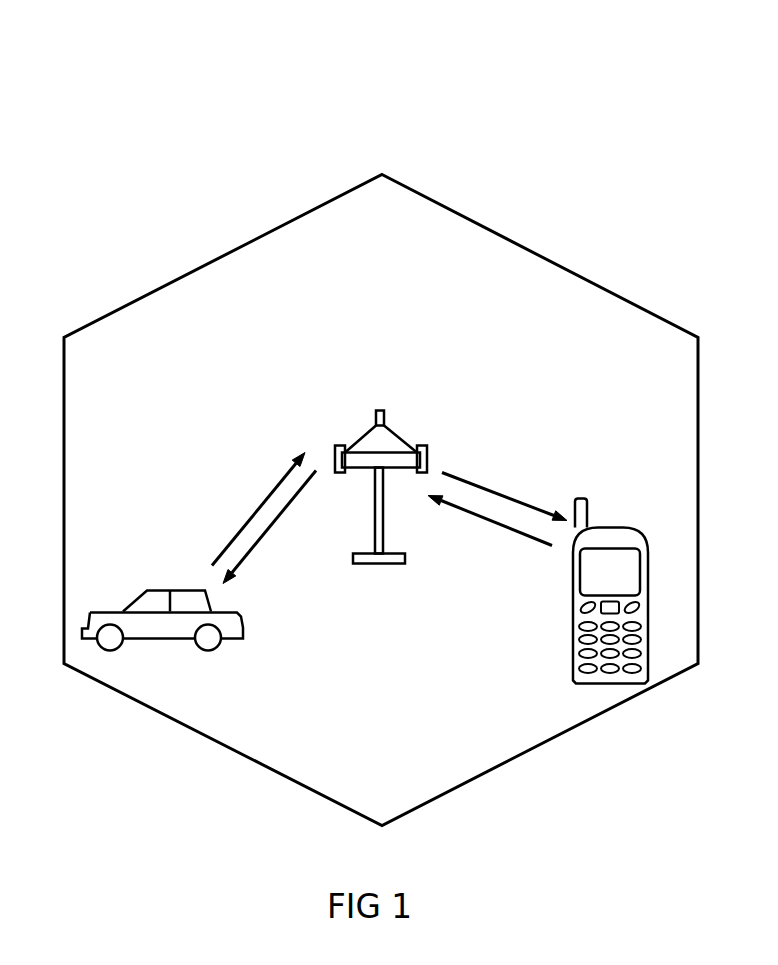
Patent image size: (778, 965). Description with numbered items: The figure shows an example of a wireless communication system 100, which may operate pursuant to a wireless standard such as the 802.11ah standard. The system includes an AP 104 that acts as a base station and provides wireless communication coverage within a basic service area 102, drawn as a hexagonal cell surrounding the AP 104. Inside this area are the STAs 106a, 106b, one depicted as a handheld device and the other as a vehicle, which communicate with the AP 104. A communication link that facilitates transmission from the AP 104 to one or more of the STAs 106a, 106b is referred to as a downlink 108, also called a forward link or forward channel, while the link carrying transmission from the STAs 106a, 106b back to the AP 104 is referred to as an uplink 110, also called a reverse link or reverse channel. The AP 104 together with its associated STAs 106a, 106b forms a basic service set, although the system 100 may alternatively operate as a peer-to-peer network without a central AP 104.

The wireless communication system 100 is at (645, 63).
The basic service area 102 is at (625, 296).
The AP 104 is at (381, 410).
The STA 106a is at (610, 524).
The STA 106b is at (166, 590).
The downlink 108 is at (465, 480).
The uplink 110 is at (518, 533).